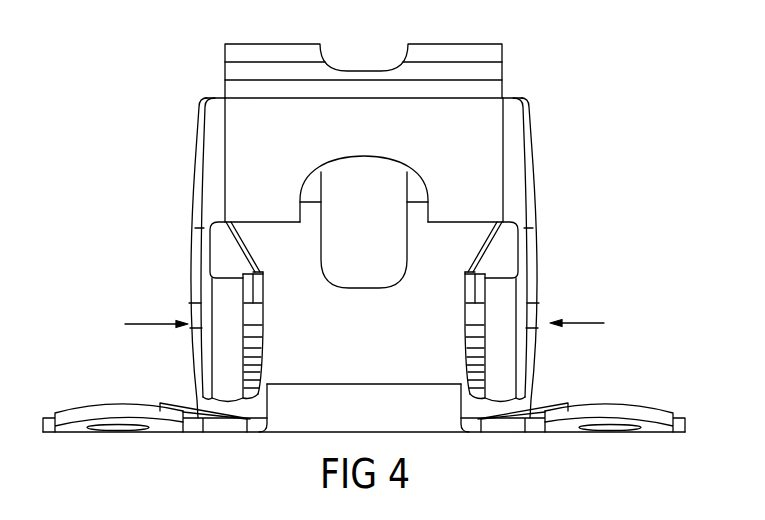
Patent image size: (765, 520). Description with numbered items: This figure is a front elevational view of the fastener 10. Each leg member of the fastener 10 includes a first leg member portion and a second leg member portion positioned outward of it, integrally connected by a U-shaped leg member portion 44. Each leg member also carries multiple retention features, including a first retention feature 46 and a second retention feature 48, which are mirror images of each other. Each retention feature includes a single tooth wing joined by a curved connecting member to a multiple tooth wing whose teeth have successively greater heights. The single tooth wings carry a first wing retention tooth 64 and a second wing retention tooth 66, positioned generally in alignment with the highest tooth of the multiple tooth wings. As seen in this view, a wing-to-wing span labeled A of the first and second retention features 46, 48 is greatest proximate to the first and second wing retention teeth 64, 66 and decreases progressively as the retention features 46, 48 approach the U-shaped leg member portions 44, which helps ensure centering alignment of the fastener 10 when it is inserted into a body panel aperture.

The fastener 10 is at (364, 226).
The U-shaped leg member portion 44 is at (495, 89).
The first retention feature 46 is at (195, 267).
The second retention feature 48 is at (535, 268).
The first wing retention tooth 64 is at (193, 315).
The second wing retention tooth 66 is at (533, 315).